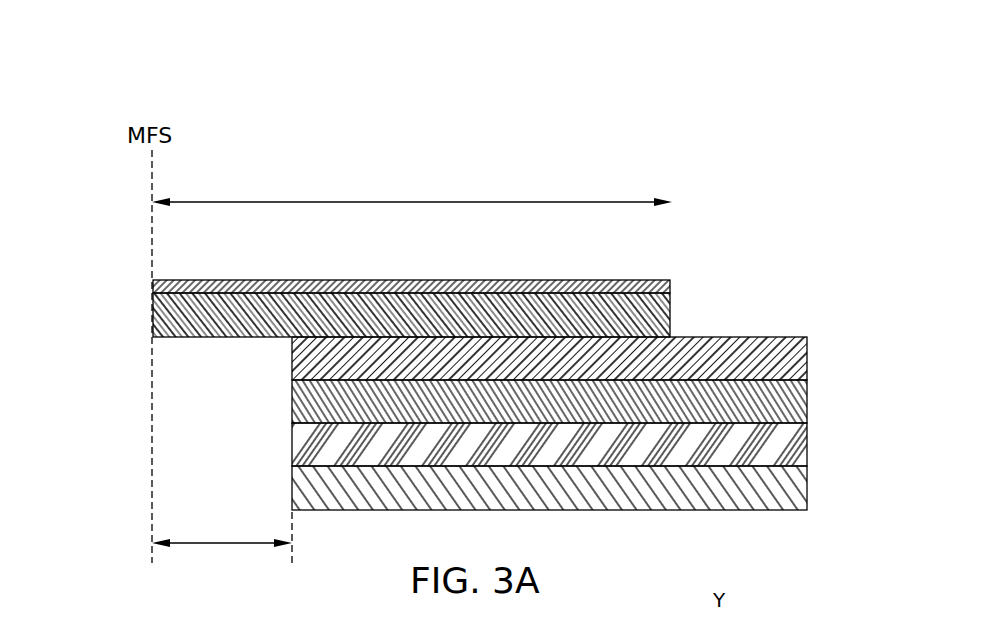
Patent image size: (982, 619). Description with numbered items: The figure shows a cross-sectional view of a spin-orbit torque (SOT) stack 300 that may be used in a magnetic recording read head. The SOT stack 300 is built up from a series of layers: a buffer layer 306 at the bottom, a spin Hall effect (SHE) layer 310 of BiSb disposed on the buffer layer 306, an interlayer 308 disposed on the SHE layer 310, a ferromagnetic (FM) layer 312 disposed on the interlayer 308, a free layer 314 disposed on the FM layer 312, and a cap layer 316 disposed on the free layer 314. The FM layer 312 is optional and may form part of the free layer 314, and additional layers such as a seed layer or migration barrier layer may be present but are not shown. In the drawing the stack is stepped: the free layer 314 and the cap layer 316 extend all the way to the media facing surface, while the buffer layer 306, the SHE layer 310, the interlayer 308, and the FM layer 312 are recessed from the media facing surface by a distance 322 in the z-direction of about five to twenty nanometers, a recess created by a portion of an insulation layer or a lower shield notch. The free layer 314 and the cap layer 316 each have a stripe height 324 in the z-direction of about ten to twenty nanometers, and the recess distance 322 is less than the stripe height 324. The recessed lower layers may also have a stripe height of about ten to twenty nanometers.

The spin-orbit torque (SOT) stack 300 is at (140, 55).
The buffer layer 306 is at (807, 482).
The interlayer 308 is at (807, 394).
The spin Hall effect (SHE) layer 310 is at (807, 437).
The ferromagnetic (FM) layer 312 is at (807, 351).
The free layer 314 is at (668, 305).
The cap layer 316 is at (603, 280).
The distance 322 is at (220, 542).
The stripe height 324 is at (402, 201).